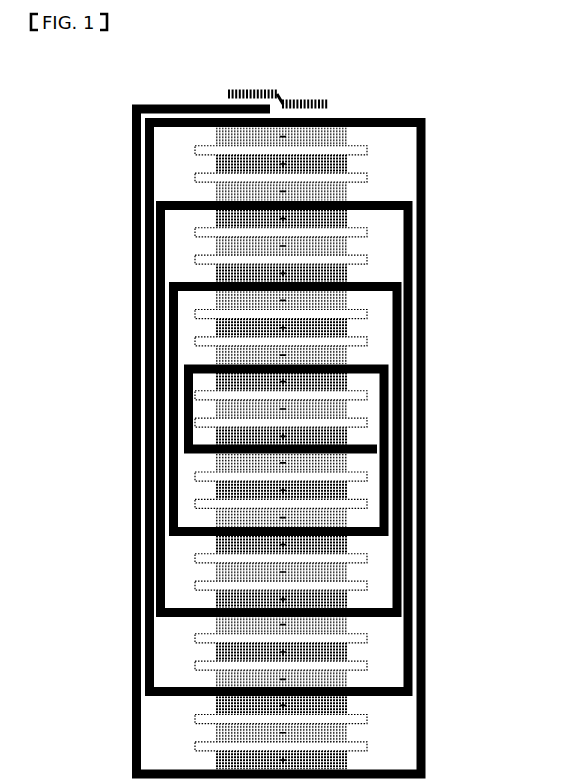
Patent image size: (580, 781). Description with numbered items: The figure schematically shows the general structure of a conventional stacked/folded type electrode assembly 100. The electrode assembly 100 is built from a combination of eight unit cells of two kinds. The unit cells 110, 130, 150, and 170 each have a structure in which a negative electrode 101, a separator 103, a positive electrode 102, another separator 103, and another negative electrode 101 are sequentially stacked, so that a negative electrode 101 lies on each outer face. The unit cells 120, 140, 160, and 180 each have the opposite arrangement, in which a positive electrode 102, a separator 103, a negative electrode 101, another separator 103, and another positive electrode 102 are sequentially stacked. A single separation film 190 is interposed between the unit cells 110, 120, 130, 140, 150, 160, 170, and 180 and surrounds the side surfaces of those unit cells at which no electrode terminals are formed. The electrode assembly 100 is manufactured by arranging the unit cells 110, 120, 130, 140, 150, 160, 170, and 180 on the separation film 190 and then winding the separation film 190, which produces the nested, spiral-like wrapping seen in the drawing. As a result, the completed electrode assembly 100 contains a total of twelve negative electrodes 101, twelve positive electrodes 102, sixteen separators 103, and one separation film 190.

The electrode assembly 100 is at (108, 126).
The negative electrode 101 is at (214, 133).
The positive electrode 102 is at (214, 217).
The separator 103 is at (207, 311).
The unit cell 110 is at (363, 168).
The unit cell 120 is at (363, 250).
The unit cell 130 is at (363, 331).
The unit cell 140 is at (363, 411).
The unit cell 150 is at (363, 493).
The unit cell 160 is at (363, 573).
The unit cell 170 is at (363, 653).
The unit cell 180 is at (363, 733).
The separation film 190 is at (131, 412).